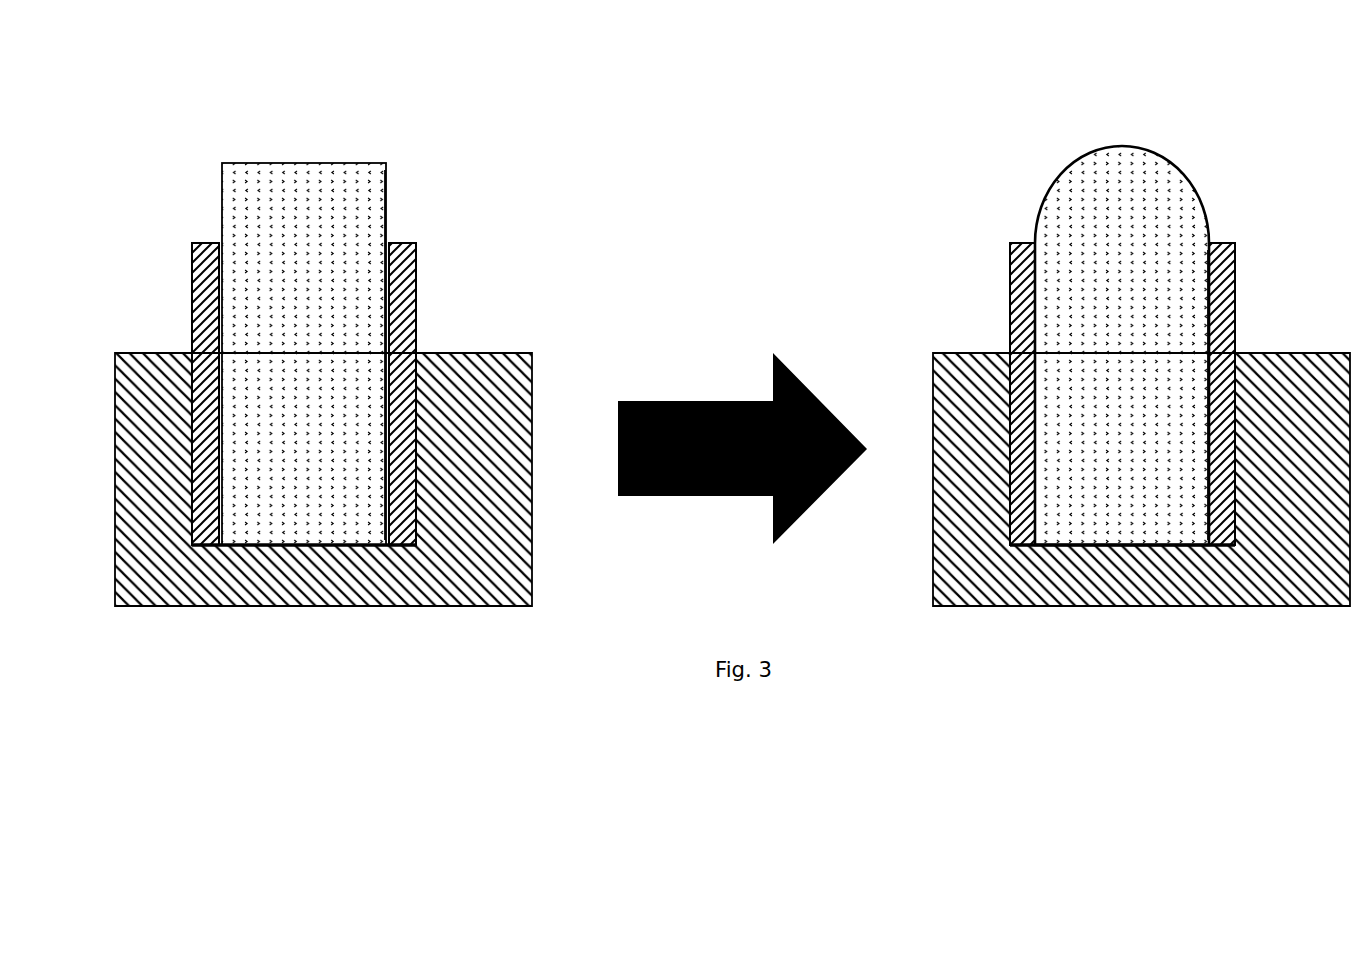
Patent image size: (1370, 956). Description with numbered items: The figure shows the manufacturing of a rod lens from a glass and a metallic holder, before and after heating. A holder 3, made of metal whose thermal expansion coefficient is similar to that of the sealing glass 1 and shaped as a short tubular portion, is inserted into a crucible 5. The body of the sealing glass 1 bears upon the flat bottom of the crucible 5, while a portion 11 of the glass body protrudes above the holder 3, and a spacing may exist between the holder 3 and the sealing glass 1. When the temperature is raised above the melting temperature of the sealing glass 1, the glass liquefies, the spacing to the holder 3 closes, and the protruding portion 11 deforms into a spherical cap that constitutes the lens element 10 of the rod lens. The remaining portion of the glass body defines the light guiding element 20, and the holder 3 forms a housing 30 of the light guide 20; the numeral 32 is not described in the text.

The sealing glass 1 is at (330, 198).
The portion of the sealing glass body 11 is at (347, 235).
The holder 3 is at (182, 304).
The crucible 5 is at (471, 424).
The lens element 10 is at (1143, 201).
The light guiding element 20 is at (1165, 320).
The housing 30 is at (1001, 291).
The outer sleeve wall 32 is at (1235, 320).